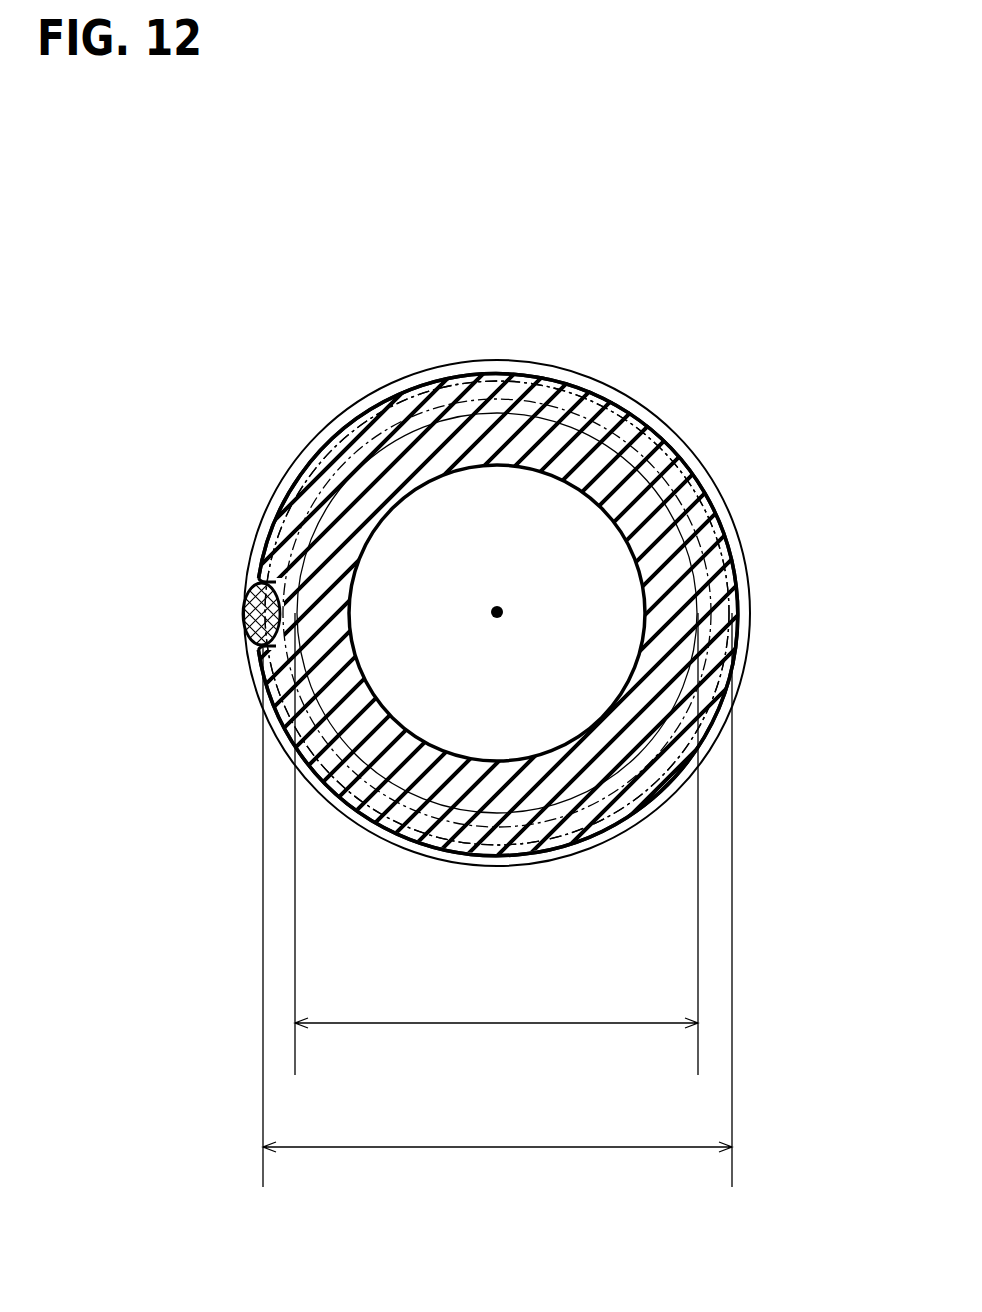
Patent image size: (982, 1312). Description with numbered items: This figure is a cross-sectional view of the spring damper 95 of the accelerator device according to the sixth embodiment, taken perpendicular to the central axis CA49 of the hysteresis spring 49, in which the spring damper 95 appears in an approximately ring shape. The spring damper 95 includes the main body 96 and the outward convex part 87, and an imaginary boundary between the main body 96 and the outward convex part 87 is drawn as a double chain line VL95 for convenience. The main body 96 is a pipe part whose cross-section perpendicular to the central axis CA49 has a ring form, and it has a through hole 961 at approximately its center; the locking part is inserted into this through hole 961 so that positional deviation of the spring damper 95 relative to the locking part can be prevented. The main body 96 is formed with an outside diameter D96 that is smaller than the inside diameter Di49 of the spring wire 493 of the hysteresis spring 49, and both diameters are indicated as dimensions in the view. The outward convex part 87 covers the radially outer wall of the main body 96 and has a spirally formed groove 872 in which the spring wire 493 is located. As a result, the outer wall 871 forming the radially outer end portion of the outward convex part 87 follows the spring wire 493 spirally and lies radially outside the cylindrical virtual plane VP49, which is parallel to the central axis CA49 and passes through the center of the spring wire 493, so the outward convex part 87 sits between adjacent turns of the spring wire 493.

The hysteresis spring 49 is at (764, 682).
The spring wire 493 is at (567, 853).
The main body 96 is at (558, 463).
The through hole 961 is at (612, 529).
The outward convex part 87 is at (293, 525).
The outer wall 871 is at (265, 564).
The groove 872 is at (256, 621).
The spring damper 95 is at (395, 848).
The imaginary boundary VL95 is at (333, 481).
The cylindrical virtual plane VP49 is at (497, 855).
The central axis CA49 is at (496, 606).
The outside diameter D96 is at (569, 1025).
The inside diameter Di49 is at (545, 1149).